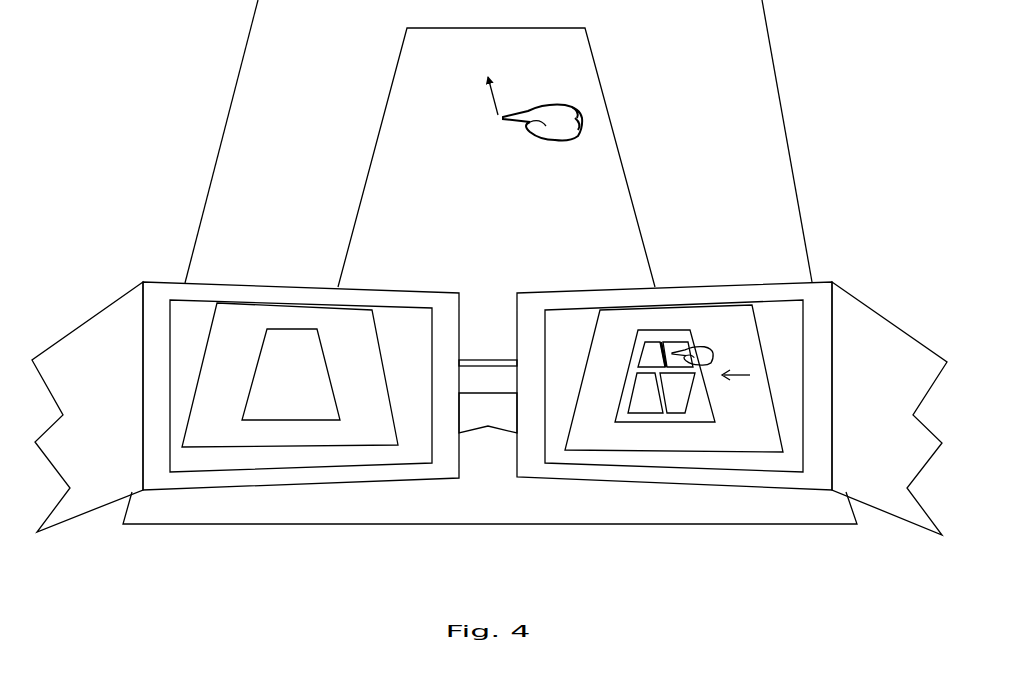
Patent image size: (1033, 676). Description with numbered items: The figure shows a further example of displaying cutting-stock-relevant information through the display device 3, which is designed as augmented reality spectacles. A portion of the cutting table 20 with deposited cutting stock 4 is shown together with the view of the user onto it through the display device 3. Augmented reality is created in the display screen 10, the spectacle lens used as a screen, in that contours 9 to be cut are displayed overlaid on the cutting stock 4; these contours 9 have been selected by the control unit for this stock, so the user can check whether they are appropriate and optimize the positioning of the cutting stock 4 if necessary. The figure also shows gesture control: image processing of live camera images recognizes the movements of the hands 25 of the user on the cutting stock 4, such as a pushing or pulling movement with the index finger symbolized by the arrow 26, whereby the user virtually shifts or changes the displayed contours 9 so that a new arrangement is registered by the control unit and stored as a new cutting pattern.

The display device 3 is at (489, 385).
The cutting stock 4 is at (493, 495).
The contours 9 is at (752, 375).
The display screen 10 is at (518, 344).
The cutting table 20 is at (498, 141).
The hands 25 is at (545, 130).
The arrow 26 is at (497, 97).